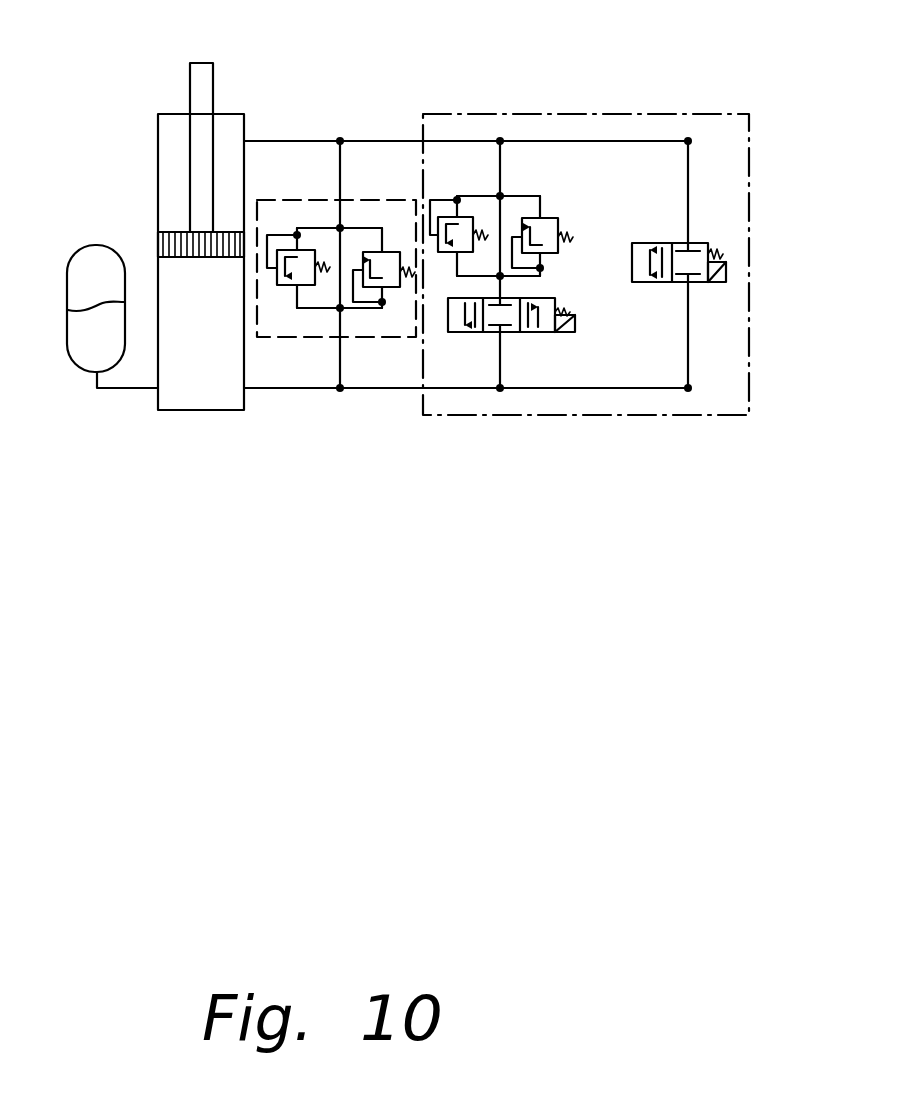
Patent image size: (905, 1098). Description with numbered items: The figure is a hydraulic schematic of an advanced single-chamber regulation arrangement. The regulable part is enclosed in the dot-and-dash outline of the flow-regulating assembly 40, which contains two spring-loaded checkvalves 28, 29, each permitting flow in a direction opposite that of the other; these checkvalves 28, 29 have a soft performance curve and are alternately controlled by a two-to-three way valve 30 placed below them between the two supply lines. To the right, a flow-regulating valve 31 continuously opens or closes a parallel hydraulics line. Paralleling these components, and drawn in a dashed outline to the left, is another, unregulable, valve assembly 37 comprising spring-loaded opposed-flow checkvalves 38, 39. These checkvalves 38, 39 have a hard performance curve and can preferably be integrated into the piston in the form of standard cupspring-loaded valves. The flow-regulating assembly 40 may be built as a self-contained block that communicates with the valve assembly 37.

The spring-loaded checkvalve 28 is at (468, 212).
The spring-loaded checkvalve 29 is at (547, 218).
The two-to-three way valve 30 is at (530, 332).
The flow-regulating valve 31 is at (665, 282).
The valve assembly 37 is at (302, 338).
The spring-loaded opposed-flow checkvalve 38 is at (300, 250).
The spring-loaded opposed-flow checkvalve 39 is at (392, 252).
The flow-regulating assembly 40 is at (567, 420).